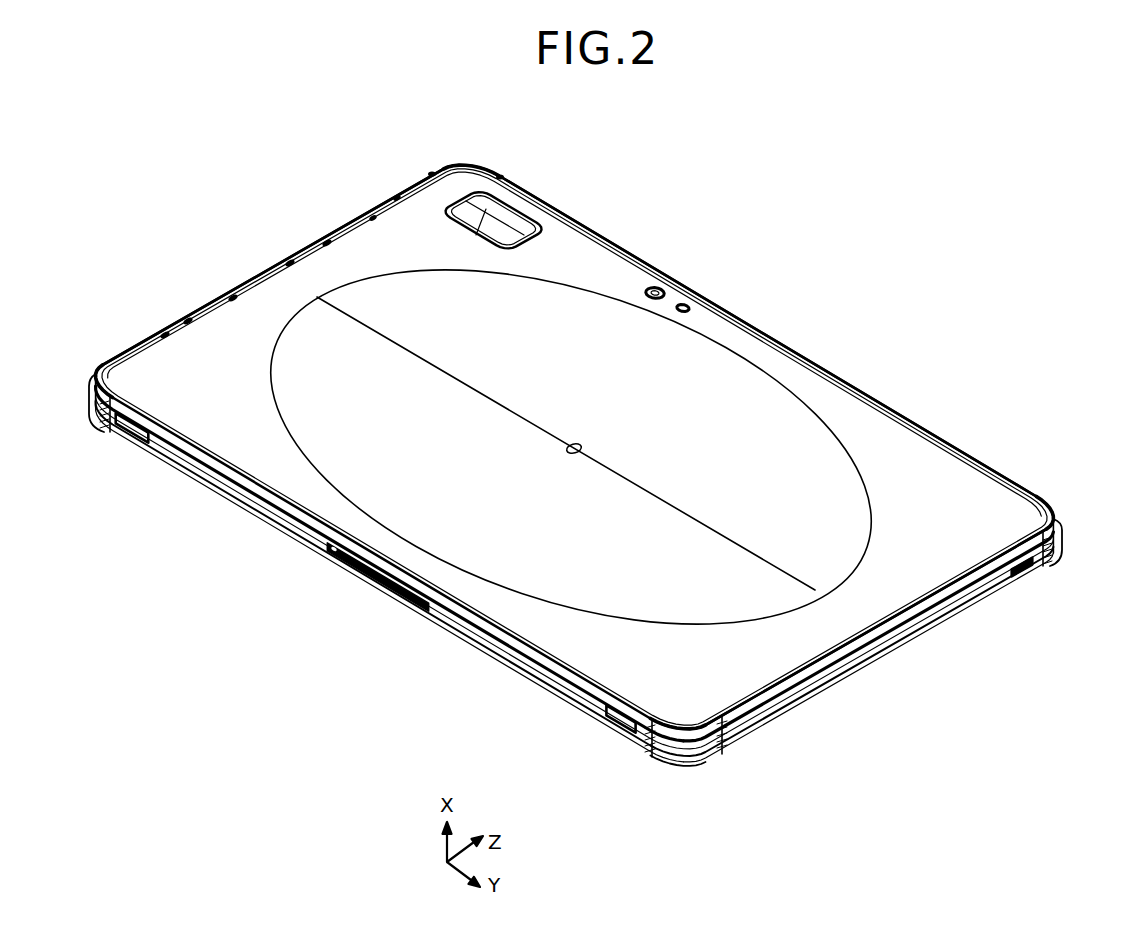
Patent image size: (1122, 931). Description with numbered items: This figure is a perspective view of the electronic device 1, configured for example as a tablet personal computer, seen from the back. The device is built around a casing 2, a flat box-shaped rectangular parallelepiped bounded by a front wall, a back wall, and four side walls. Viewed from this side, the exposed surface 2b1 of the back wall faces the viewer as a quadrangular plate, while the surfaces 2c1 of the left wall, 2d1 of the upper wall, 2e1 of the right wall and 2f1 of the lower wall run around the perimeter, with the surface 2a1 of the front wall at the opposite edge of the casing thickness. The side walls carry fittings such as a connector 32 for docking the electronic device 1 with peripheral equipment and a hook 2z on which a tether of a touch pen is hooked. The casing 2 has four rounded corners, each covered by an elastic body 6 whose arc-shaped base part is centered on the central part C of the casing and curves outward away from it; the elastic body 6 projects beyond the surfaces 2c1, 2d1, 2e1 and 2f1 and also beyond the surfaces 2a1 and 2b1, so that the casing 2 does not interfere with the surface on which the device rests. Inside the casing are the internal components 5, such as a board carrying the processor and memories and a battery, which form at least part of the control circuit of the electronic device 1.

The electronic device 1 is at (797, 171).
The casing 2 is at (895, 411).
The surface of the right wall 2e1 is at (263, 276).
The surface of the upper wall 2d1 is at (770, 328).
The surface of the left wall 2c1 is at (918, 628).
The surface of the back wall 2b1 is at (808, 646).
The surface of the front wall 2a1 is at (787, 716).
The surface of the lower wall 2f1 is at (455, 620).
The hook 2z is at (1022, 572).
The internal components 5 is at (577, 325).
The elastic body 6 is at (463, 164).
The connector 32 is at (378, 578).
The central part C is at (567, 451).